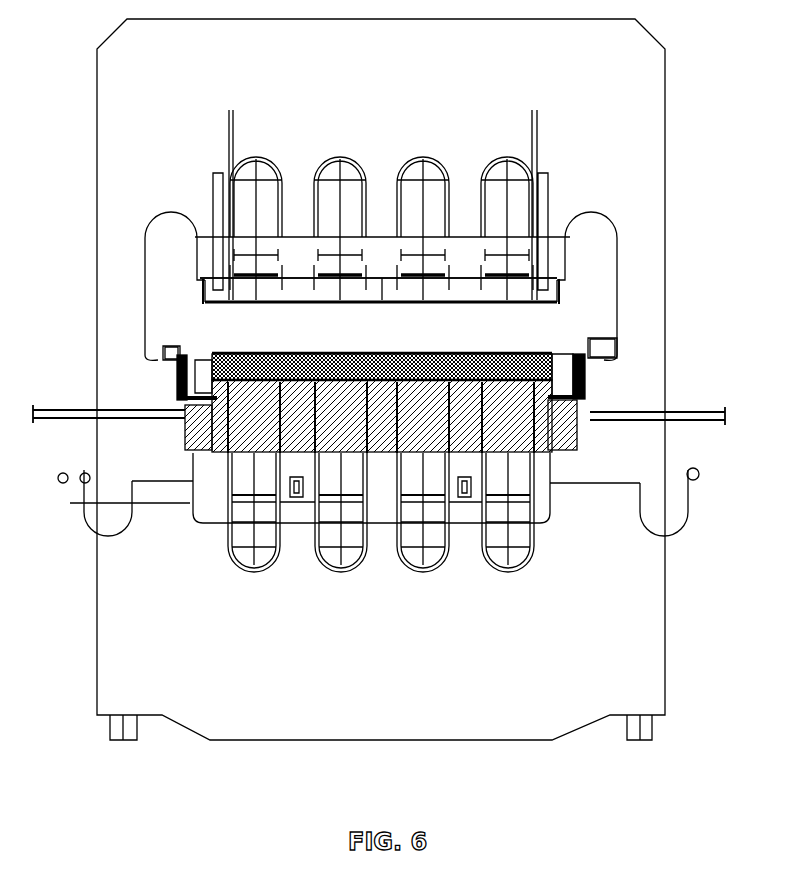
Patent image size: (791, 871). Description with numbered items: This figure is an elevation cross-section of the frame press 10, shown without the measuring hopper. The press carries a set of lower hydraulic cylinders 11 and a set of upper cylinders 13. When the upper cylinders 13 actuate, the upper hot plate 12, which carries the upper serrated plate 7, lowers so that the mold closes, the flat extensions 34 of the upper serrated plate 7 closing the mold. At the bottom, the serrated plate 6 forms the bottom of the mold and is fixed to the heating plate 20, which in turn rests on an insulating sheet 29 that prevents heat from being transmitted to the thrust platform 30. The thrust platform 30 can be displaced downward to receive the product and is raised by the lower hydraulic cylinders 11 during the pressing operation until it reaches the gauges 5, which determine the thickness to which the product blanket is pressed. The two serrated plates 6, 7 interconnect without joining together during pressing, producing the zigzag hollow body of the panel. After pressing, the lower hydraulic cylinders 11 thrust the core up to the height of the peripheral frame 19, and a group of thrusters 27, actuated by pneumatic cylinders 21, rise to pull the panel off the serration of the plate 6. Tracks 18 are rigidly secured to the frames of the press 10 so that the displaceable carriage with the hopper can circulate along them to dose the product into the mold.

The gauges 5 is at (580, 403).
The serrated plate 6 is at (440, 357).
The serrated plate 7 is at (245, 308).
The frame press 10 is at (415, 710).
The lower hydraulic cylinders 11 is at (338, 575).
The upper hot plate 12 is at (552, 288).
The upper cylinders 13 is at (500, 158).
The tracks 18 is at (606, 345).
The peripheral frame 19 is at (568, 377).
The heating plate 20 is at (503, 375).
The pneumatic cylinders 21 is at (460, 512).
The thrusters 27 is at (390, 392).
The insulating sheet 29 is at (255, 376).
The thrust platform 30 is at (185, 437).
The flat extensions 34 is at (557, 305).